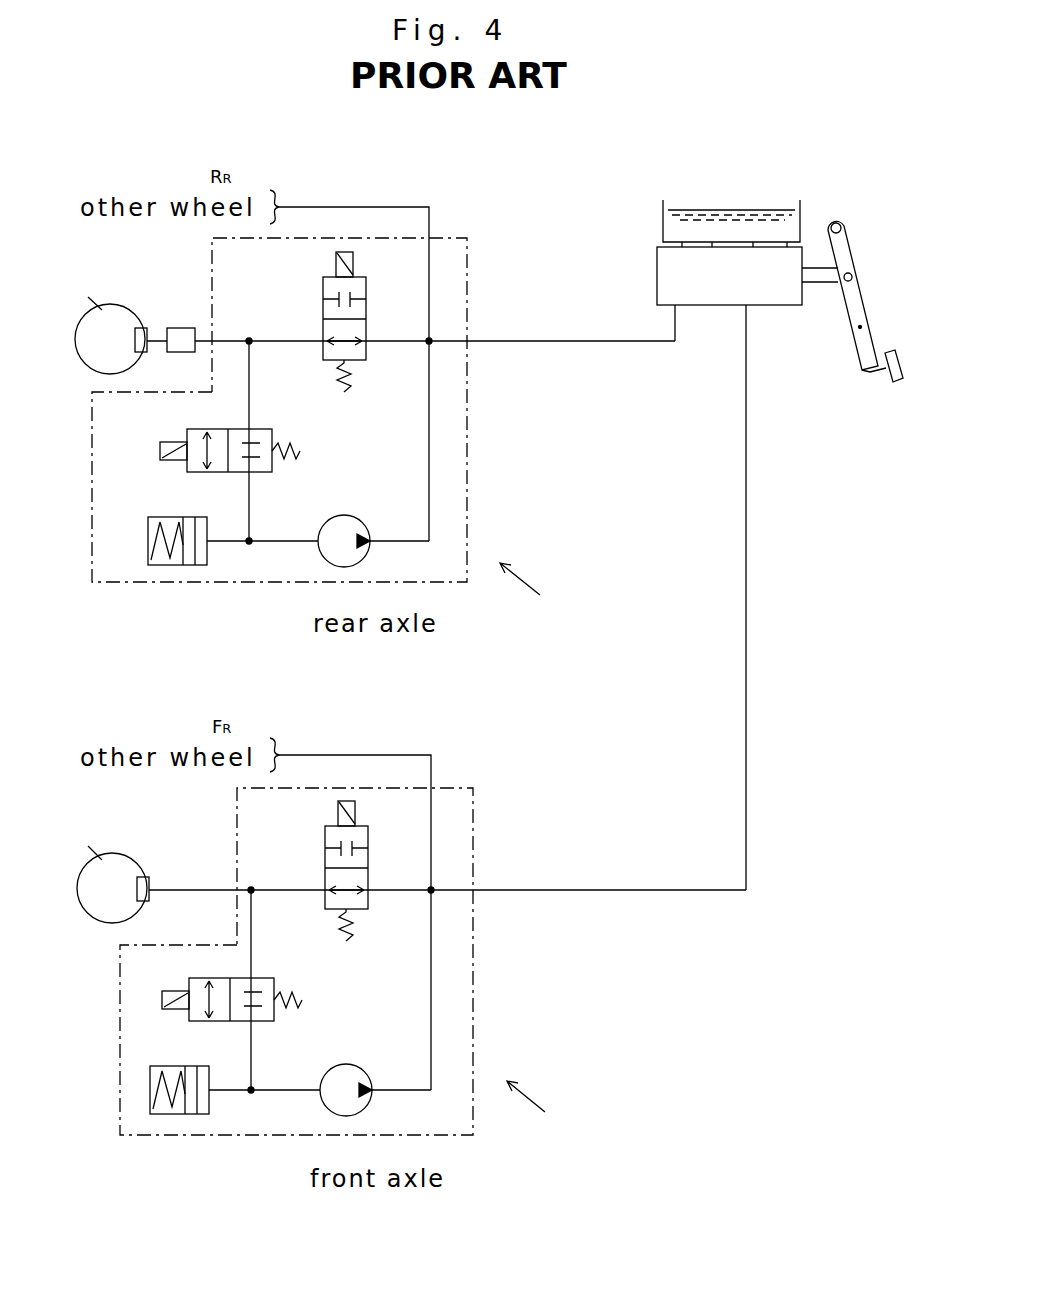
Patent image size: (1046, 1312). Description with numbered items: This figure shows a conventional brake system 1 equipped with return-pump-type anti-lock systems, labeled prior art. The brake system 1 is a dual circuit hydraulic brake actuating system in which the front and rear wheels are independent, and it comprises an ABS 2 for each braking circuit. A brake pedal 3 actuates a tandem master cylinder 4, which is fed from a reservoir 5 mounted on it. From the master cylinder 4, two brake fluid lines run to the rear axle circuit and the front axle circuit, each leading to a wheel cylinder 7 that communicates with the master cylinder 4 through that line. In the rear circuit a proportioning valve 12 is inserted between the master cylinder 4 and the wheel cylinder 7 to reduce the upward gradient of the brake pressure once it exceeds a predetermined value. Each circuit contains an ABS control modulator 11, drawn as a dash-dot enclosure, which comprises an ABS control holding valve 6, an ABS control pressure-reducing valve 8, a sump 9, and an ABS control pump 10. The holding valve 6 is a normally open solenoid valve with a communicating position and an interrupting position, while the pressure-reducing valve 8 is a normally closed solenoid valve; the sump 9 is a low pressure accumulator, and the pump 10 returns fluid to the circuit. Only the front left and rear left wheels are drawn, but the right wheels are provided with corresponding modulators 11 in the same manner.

The brake system 1 is at (787, 878).
The ABS 2 is at (534, 848).
The brake pedal 3 is at (900, 378).
The tandem master cylinder 4 is at (772, 297).
The reservoir 5 is at (800, 226).
The ABS control holding valve 6 is at (323, 288).
The wheel cylinder 7 is at (142, 328).
The ABS control pressure-reducing valve 8 is at (265, 430).
The sump 9 is at (148, 525).
The ABS control pump 10 is at (348, 516).
The ABS control modulator 11 is at (469, 513).
The proportioning valve 12 is at (177, 353).